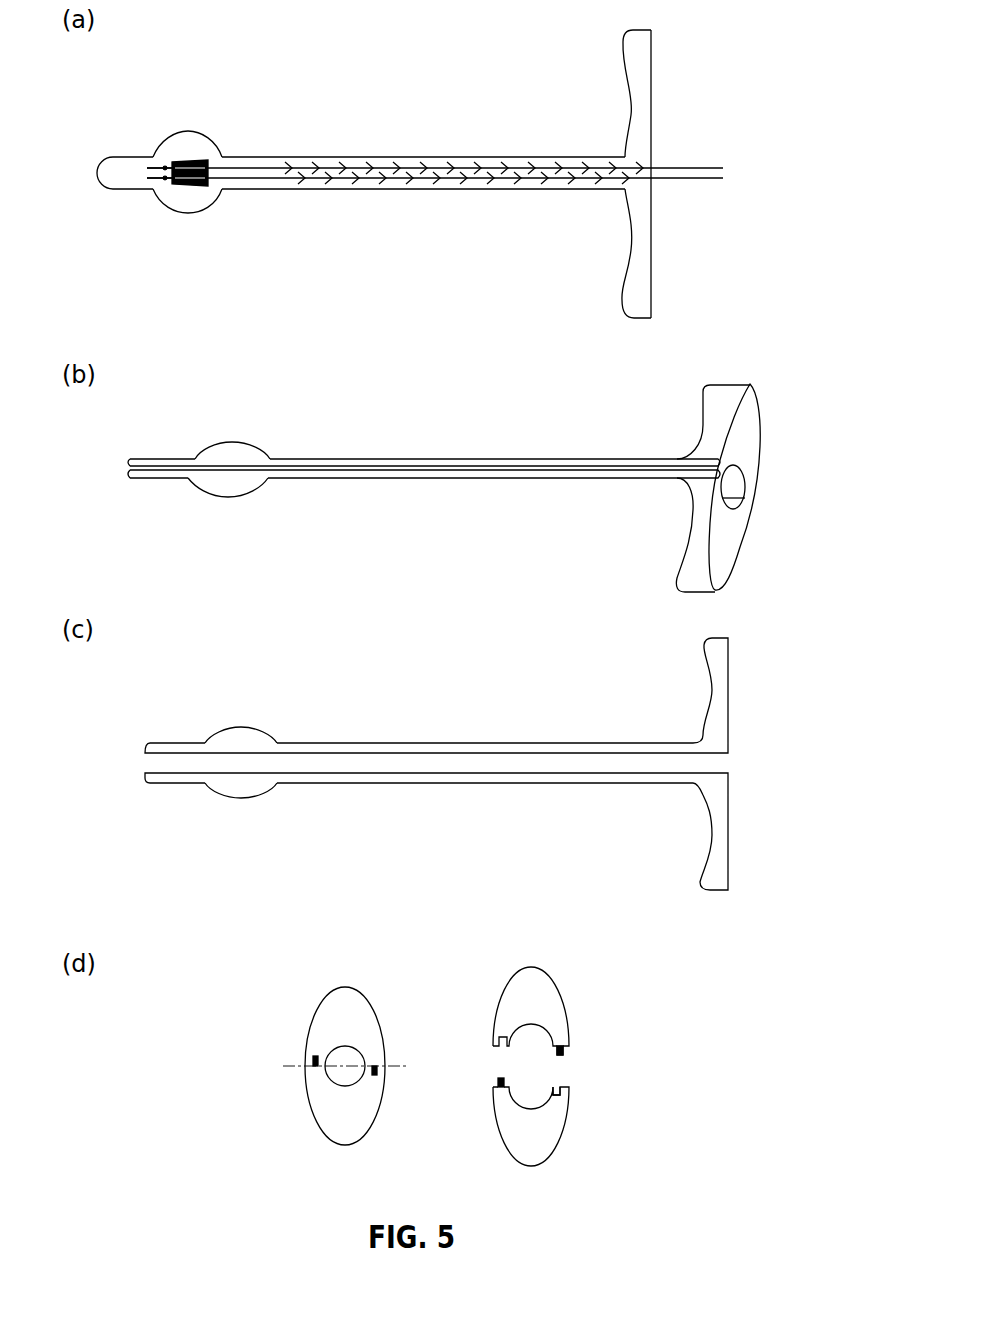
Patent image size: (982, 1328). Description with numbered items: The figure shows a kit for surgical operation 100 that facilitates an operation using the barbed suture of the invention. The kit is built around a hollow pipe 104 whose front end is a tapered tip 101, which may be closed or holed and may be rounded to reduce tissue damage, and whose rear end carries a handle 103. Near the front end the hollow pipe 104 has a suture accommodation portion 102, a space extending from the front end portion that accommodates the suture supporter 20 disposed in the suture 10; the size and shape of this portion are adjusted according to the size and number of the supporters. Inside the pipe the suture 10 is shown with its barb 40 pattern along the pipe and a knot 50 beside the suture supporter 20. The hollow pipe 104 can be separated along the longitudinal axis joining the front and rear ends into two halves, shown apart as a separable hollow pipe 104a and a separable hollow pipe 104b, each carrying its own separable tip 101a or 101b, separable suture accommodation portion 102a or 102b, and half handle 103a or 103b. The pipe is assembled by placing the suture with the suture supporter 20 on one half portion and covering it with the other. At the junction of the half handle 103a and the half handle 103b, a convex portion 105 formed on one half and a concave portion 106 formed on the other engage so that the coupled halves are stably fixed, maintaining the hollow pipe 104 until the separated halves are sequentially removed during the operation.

The suture 10 is at (693, 167).
The suture supporter 20 is at (188, 187).
The barb 40 is at (405, 165).
The knot 50 is at (163, 180).
The kit for surgical operation 100 is at (462, 284).
The tip 101 is at (113, 156).
The suture accommodation portion 102 is at (200, 137).
The handle 103 is at (625, 62).
The hollow pipe 104 is at (263, 191).
The separable tip 101a is at (148, 742).
The separable tip 101b is at (147, 785).
The separable suture accommodation portion 102a is at (250, 728).
The separable suture accommodation portion 102b is at (253, 798).
The half handle 103a is at (707, 395).
The half handle 103b is at (683, 572).
The separable hollow pipe 104a is at (475, 743).
The separable hollow pipe 104b is at (453, 783).
The convex portion 105 is at (563, 1052).
The concave portion 106 is at (563, 1095).